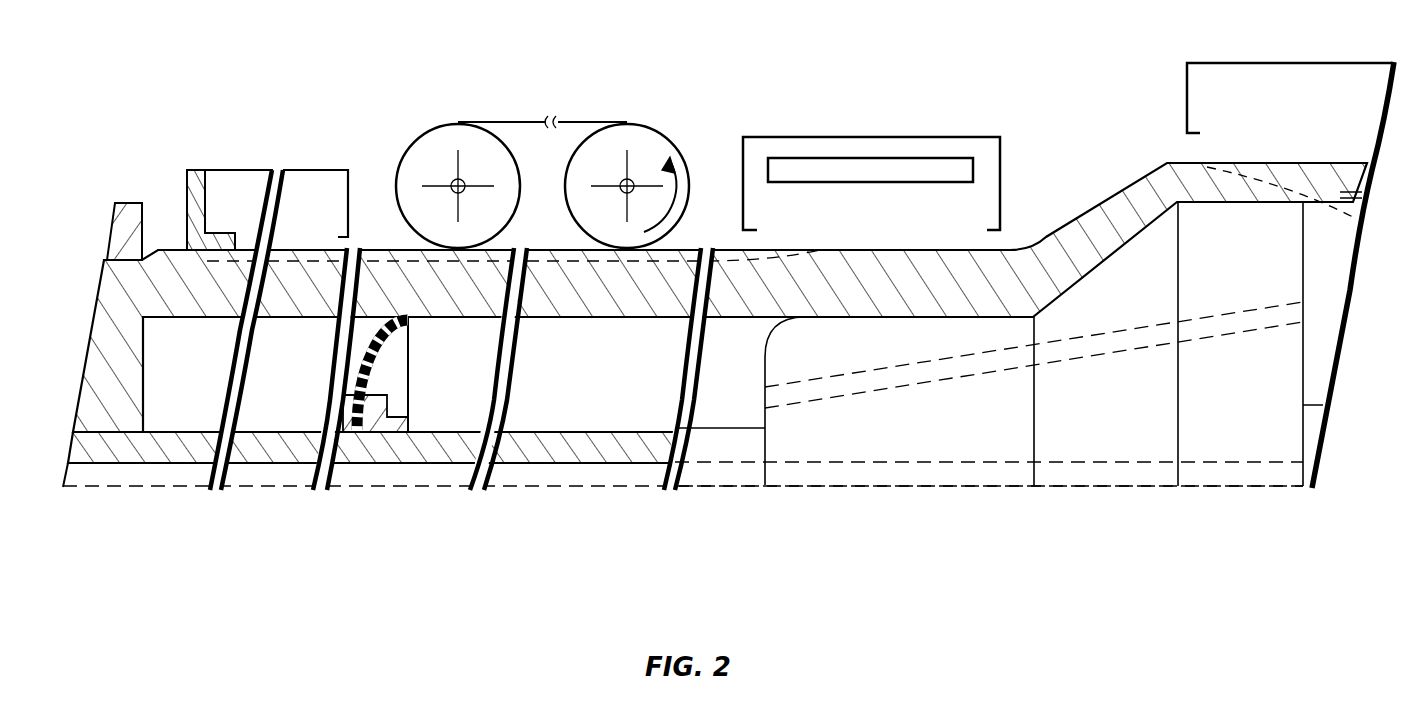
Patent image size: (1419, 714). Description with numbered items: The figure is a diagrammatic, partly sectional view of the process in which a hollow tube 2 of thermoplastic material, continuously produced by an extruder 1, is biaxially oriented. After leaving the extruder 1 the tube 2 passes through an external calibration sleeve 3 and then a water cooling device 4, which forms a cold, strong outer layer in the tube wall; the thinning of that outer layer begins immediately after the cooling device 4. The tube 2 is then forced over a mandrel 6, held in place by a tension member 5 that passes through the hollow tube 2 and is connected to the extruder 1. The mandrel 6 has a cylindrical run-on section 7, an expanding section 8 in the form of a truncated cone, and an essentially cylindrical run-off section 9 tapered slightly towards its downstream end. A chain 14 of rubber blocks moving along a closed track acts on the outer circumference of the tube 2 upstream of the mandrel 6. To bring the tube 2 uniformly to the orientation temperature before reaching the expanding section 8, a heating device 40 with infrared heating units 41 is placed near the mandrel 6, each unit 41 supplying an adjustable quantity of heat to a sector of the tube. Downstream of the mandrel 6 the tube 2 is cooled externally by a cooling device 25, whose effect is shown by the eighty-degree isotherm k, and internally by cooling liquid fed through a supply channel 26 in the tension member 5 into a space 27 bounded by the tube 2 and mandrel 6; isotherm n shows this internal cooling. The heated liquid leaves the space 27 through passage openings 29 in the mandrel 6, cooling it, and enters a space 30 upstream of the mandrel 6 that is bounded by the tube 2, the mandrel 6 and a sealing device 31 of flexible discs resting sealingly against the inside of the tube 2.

The extruder 1 is at (130, 215).
The hollow tube 2 is at (1087, 226).
The external calibration sleeve 3 is at (198, 172).
The cooling device 4 is at (243, 170).
The tension member 5 is at (583, 447).
The mandrel 6 is at (833, 492).
The cylindrical run-on section 7 is at (882, 436).
The expanding section 8 is at (1105, 440).
The run-off section 9 is at (1234, 440).
The chain of rubber blocks 14 is at (458, 122).
The cooling device 25 is at (1283, 63).
The supply channel 26 is at (425, 473).
The space 27 is at (1325, 285).
The passage openings 29 is at (1119, 332).
The space 30 is at (597, 388).
The sealing device 31 is at (382, 368).
The heating device 40 is at (820, 137).
The infrared heating units 41 is at (921, 158).
The 80° C. isotherm line k is at (1288, 172).
The 80° C. isotherm line n is at (1366, 226).